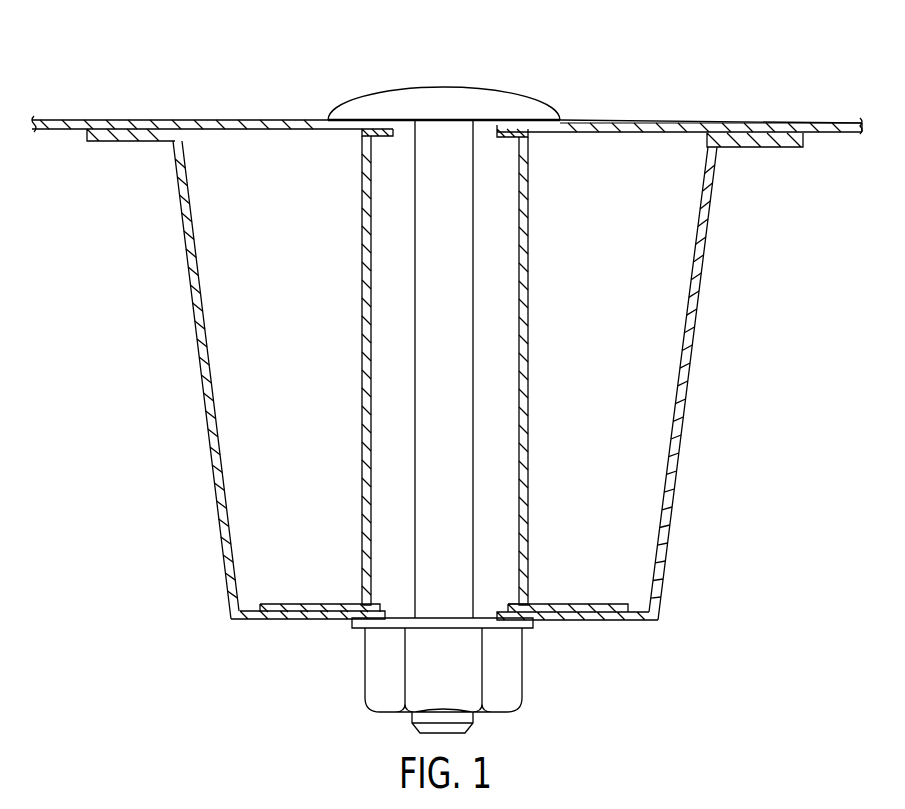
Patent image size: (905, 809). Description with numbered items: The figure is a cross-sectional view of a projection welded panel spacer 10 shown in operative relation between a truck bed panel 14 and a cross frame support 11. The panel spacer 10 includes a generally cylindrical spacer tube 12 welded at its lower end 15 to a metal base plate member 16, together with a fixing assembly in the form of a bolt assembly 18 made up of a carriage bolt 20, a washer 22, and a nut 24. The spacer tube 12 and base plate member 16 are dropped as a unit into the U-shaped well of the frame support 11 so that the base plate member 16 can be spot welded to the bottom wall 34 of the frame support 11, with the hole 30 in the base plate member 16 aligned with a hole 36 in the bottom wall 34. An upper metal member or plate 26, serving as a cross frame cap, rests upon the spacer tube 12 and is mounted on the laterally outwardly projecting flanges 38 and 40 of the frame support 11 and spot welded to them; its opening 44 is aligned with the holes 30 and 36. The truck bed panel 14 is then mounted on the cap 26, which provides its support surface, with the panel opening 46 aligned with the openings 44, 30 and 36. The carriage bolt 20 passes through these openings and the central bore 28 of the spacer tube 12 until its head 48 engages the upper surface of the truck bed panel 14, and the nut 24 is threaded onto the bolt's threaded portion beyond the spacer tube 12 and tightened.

The panel spacer 10 is at (358, 287).
The cross frame support 11 is at (186, 292).
The spacer tube 12 is at (528, 313).
The truck bed panel 14 is at (246, 116).
The lower end of spacer tube 15 is at (523, 603).
The metal base plate member 16 is at (298, 603).
The bolt assembly 18 is at (402, 87).
The carriage bolt 20 is at (460, 246).
The washer 22 is at (382, 632).
The nut 24 is at (375, 682).
The plate (cross frame cap) 26 is at (587, 134).
The central bore 28 is at (495, 415).
The hole in base plate 30 is at (508, 606).
The bottom wall of frame support 34 is at (273, 621).
The hole in bottom wall 36 is at (497, 622).
The flange 38 is at (128, 142).
The flange 40 is at (768, 148).
The opening in cap 44 is at (505, 137).
The opening in bed panel 46 is at (480, 135).
The head of carriage bolt 48 is at (377, 106).